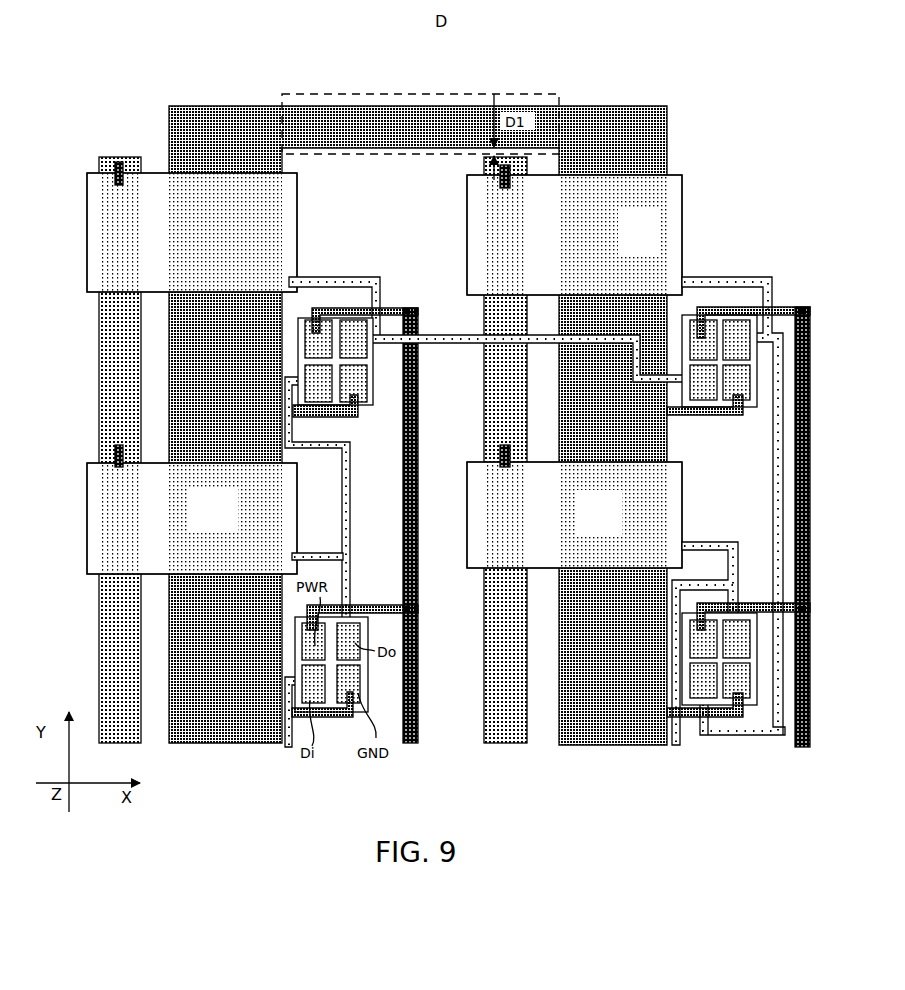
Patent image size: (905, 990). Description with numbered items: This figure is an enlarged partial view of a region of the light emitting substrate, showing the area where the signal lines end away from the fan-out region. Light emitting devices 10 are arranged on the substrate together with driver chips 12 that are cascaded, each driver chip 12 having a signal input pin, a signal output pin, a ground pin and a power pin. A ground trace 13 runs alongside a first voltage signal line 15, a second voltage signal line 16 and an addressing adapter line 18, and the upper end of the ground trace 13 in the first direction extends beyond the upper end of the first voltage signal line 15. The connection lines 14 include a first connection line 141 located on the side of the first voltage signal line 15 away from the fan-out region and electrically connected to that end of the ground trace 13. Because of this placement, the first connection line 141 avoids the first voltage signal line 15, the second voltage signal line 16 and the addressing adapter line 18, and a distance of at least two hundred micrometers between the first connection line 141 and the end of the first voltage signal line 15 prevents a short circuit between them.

The light emitting device 10 is at (88, 258).
The driver chip 12 is at (297, 345).
The ground trace 13 is at (217, 722).
The connection line 14 is at (420, 104).
The first connection line 141 is at (312, 94).
The first voltage signal line 15 is at (124, 706).
The second voltage signal line 16 is at (410, 748).
The addressing adapter line 18 is at (282, 746).